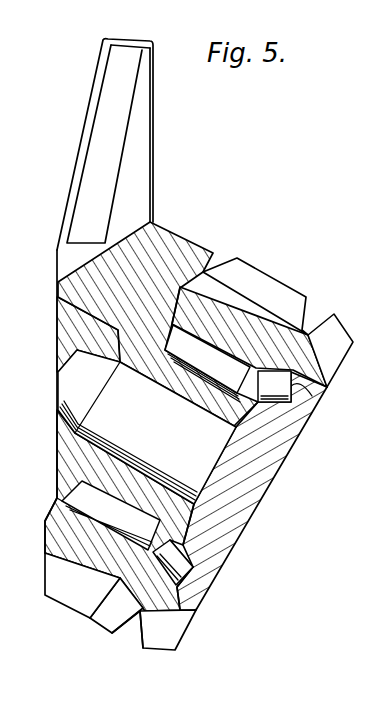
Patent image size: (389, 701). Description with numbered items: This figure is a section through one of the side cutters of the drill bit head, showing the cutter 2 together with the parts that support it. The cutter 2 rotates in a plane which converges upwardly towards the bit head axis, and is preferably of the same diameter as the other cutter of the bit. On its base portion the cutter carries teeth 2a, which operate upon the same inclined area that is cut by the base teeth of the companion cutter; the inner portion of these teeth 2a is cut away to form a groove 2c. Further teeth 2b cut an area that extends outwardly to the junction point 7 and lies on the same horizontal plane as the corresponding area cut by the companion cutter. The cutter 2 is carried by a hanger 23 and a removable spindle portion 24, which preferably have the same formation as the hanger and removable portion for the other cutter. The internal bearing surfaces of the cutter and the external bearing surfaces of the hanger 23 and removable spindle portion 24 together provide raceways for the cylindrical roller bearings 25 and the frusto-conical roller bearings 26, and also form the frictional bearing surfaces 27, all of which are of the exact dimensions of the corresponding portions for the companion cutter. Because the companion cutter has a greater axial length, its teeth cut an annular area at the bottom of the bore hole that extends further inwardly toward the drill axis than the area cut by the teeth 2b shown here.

The cutter 2 is at (118, 578).
The teeth 2a is at (58, 595).
The teeth 2b is at (177, 643).
The groove 2c is at (133, 624).
The junction point 7 is at (145, 614).
The hanger 23 is at (172, 244).
The removable spindle portion 24 is at (262, 482).
The cylindrical roller bearings 25 is at (193, 367).
The frusto-conical roller bearings 26 is at (289, 405).
The frictional bearing surfaces 27 is at (312, 405).